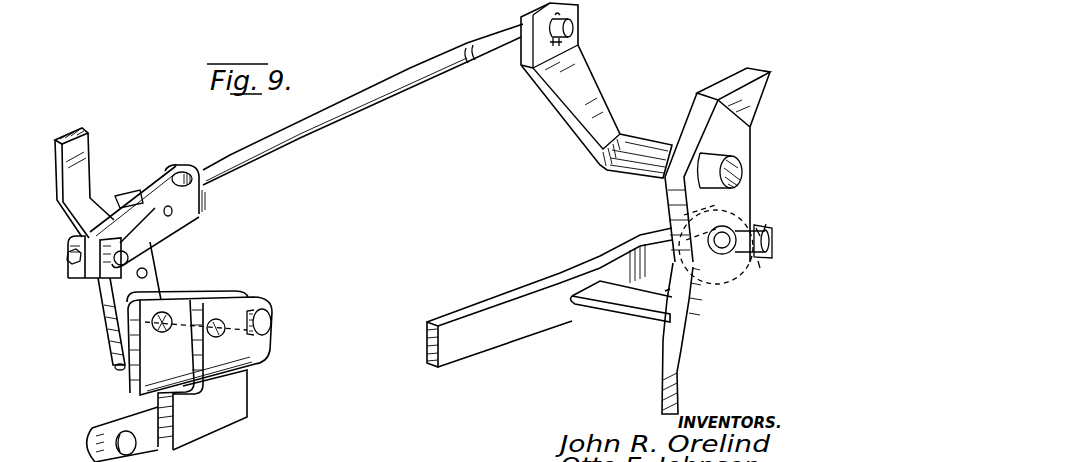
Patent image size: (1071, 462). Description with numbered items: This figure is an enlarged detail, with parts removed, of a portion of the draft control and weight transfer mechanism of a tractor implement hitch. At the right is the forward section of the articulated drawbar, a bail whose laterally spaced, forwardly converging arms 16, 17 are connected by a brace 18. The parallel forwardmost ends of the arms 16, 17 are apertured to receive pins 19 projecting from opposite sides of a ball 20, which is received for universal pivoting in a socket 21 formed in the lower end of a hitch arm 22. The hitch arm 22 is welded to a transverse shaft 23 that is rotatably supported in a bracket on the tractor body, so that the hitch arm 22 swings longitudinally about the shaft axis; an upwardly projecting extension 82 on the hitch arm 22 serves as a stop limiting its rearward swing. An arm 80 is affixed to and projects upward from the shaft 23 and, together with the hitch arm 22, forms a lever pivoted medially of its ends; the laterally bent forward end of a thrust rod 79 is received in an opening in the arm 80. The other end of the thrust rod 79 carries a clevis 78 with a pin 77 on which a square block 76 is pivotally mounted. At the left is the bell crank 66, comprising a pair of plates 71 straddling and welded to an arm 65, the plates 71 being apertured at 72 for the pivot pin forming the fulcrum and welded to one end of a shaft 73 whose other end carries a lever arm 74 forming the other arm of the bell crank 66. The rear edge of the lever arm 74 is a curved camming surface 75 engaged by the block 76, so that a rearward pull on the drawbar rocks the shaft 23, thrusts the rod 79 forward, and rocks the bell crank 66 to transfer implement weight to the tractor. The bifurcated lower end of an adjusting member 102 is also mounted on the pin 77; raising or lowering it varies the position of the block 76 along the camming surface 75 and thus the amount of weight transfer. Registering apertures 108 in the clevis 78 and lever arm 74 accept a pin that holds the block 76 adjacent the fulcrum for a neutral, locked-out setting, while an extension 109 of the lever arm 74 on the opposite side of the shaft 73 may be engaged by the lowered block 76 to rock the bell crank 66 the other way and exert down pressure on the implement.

The arm 16 is at (478, 303).
The arm 17 is at (682, 367).
The brace 18 is at (627, 303).
The pins 19 is at (652, 222).
The ball 20 is at (733, 221).
The socket 21 is at (721, 222).
The hitch arm 22 is at (742, 140).
The transverse shaft 23 is at (642, 147).
The arm 65 is at (100, 433).
The bell crank 66 is at (264, 385).
The plates 71 is at (243, 292).
The apertures 72 is at (210, 348).
The shaft 73 is at (271, 314).
The lever arm 74 is at (153, 283).
The camming surface 75 is at (103, 302).
The square block 76 is at (98, 277).
The pin 77 is at (68, 258).
The clevis 78 is at (158, 168).
The thrust rod 79 is at (363, 95).
The arm 80 is at (578, 58).
The extension 82 is at (757, 92).
The adjusting member 102 is at (82, 147).
The registering apertures 108 is at (171, 214).
The extension 109 is at (117, 366).